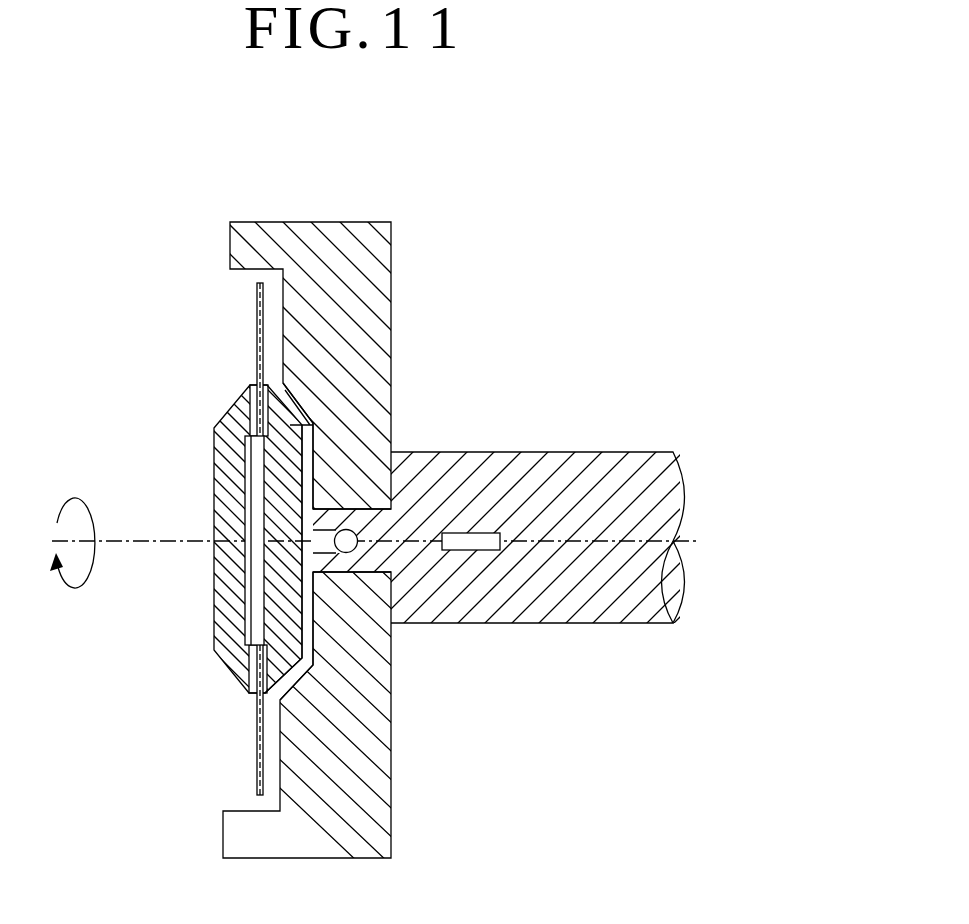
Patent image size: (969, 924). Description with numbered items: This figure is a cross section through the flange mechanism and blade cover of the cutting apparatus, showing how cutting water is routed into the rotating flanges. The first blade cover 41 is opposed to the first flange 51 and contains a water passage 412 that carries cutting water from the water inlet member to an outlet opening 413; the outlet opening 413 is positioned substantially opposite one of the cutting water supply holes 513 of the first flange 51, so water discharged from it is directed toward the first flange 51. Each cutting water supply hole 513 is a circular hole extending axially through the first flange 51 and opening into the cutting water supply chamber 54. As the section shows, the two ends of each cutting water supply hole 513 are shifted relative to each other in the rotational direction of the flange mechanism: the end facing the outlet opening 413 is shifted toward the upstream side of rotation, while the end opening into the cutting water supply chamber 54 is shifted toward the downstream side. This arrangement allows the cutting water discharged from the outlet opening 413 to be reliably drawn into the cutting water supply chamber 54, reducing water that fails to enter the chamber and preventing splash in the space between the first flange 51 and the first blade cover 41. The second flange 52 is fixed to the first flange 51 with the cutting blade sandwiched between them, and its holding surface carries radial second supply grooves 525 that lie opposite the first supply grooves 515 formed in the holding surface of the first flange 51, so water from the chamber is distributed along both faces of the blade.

The first blade cover 41 is at (365, 268).
The first flange 51 is at (313, 423).
The cutting water supply hole 513 is at (282, 512).
The first supply groove 515 is at (310, 668).
The second flange 52 is at (238, 418).
The cutting water supply chamber 54 is at (257, 470).
The second supply groove 525 is at (310, 668).
The water passage 412 is at (357, 545).
The outlet opening 413 is at (302, 550).